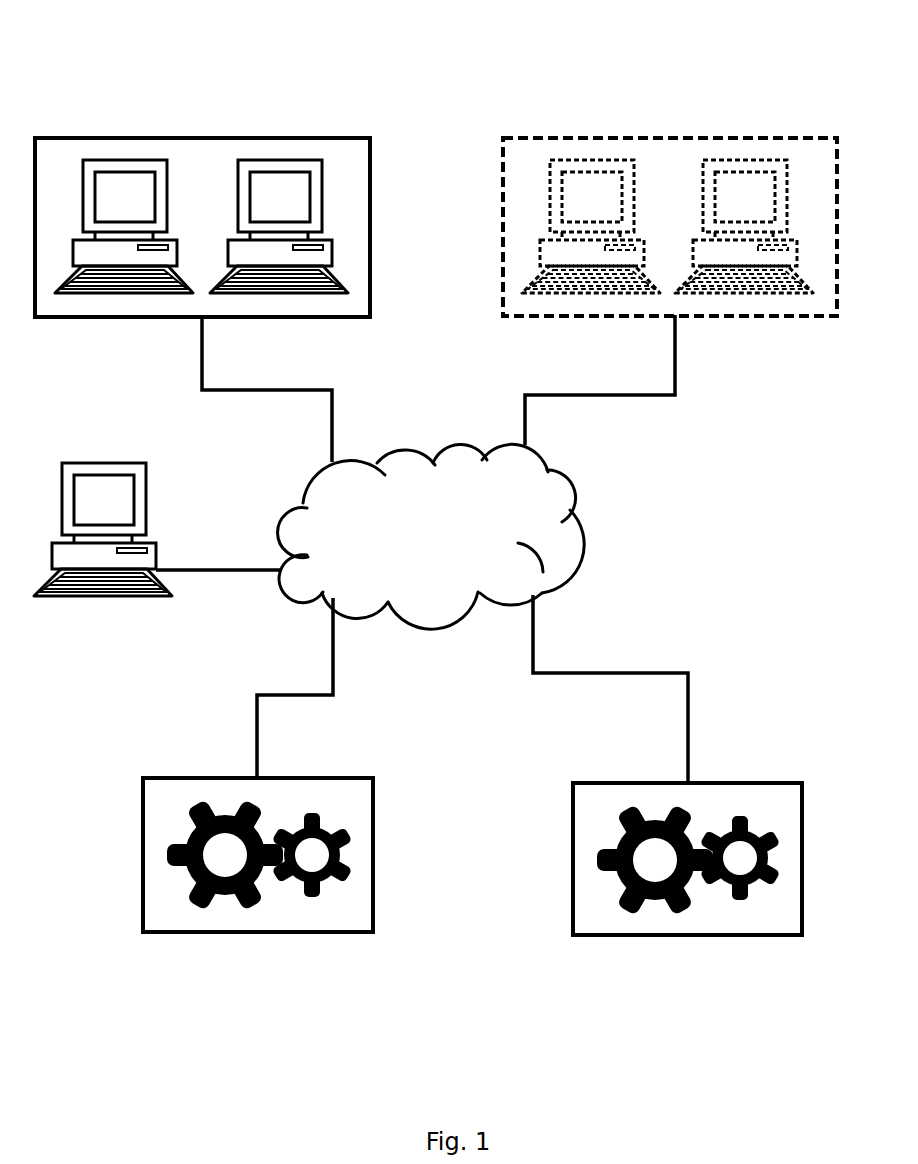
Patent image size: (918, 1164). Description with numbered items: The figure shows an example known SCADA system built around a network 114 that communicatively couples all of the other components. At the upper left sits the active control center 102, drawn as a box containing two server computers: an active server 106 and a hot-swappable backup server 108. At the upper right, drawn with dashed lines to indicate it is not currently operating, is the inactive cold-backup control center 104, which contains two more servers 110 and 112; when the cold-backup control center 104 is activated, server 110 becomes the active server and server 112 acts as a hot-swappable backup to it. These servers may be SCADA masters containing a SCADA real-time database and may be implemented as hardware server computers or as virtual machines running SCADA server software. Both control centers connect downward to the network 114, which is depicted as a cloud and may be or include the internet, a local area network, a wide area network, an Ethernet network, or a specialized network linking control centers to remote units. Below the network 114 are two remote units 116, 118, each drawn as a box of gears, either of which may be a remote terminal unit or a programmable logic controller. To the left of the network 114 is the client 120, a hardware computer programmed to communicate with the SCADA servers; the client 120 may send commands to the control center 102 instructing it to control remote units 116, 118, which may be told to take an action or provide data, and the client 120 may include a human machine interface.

The active control center 102 is at (132, 317).
The inactive cold-backup control center 104 is at (737, 317).
The active server 106 is at (128, 160).
The hot-swappable backup server 108 is at (275, 160).
The server 110 is at (592, 160).
The server 112 is at (743, 160).
The network 114 is at (585, 532).
The remote unit 116 is at (373, 822).
The remote unit 118 is at (573, 892).
The client 120 is at (145, 500).